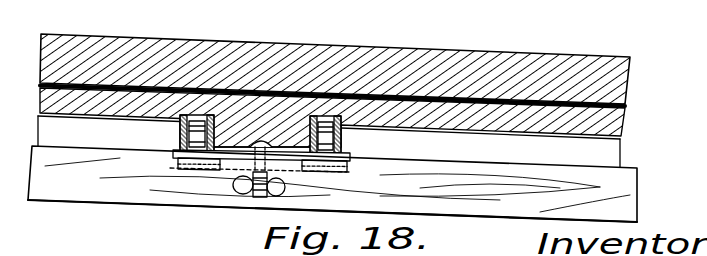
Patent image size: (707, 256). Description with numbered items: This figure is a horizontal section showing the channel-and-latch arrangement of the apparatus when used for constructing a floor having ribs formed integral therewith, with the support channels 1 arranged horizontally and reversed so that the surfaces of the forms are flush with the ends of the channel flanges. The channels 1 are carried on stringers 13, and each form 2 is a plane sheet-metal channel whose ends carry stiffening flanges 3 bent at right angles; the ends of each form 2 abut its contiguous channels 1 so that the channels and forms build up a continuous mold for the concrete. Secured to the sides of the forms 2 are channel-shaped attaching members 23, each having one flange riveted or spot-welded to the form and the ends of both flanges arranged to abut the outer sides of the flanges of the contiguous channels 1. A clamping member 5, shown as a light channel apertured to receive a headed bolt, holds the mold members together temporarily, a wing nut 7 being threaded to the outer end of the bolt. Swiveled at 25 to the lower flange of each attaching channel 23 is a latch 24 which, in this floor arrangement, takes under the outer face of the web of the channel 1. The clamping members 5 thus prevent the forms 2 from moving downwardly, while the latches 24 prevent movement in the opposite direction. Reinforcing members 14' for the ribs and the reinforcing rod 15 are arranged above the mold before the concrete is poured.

The reinforcing rod 15 is at (528, 100).
The form 2 is at (488, 132).
The reinforcing member 14' is at (260, 82).
The channel 1 is at (182, 132).
The channel-shaped attaching member 23 is at (341, 137).
The swivel 25 is at (178, 167).
The wing nut 7 is at (250, 186).
The latch 24 is at (285, 186).
The clamping member 5 is at (190, 172).
The flange 3 is at (72, 137).
The stringer 13 is at (630, 198).